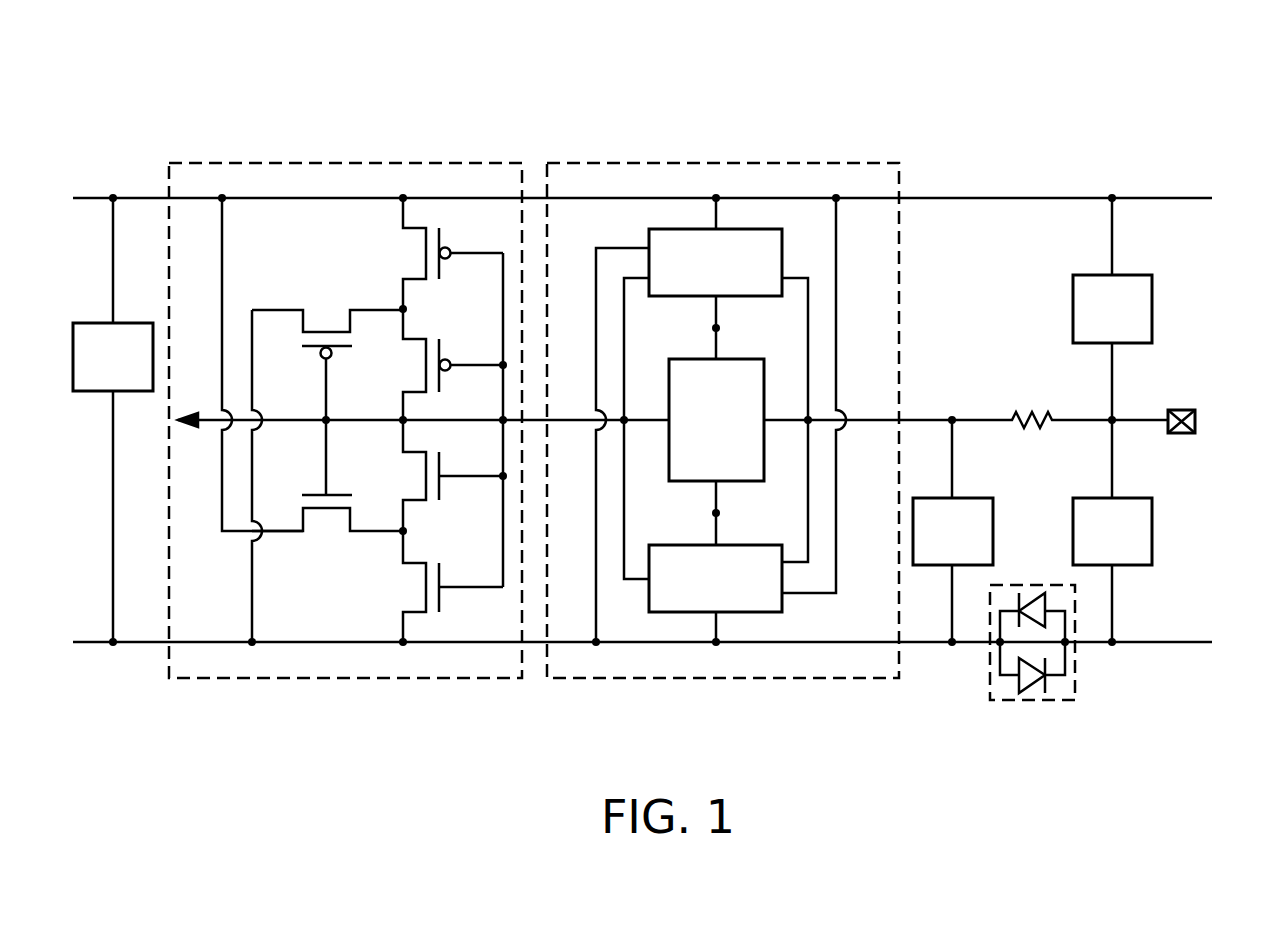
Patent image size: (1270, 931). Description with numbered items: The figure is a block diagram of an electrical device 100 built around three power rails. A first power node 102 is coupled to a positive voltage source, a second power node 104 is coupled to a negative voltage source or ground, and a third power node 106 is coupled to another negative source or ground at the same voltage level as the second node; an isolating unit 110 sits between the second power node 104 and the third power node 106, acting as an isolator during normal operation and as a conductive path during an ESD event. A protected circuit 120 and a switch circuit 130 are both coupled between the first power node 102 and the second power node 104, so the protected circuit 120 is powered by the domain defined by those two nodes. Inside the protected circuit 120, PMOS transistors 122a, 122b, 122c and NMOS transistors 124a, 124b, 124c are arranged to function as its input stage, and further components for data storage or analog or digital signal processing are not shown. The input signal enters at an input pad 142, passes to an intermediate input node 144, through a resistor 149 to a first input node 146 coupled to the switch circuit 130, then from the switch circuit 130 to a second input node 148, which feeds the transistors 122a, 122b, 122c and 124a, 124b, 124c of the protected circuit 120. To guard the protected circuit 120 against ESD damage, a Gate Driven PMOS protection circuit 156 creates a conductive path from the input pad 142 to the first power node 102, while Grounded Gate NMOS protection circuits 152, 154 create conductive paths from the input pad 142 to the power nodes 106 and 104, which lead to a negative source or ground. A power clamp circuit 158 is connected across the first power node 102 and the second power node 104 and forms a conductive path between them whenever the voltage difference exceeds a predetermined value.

The electrical device 100 is at (1192, 118).
The first power node 102 is at (1112, 196).
The second power node 104 is at (953, 646).
The third power node 106 is at (1113, 646).
The isolating unit 110 is at (1033, 703).
The protected circuit 120 is at (347, 679).
The PMOS transistor 122a is at (408, 254).
The PMOS transistor 122b is at (327, 318).
The PMOS transistor 122c is at (408, 365).
The NMOS transistor 124a is at (408, 587).
The NMOS transistor 124b is at (327, 523).
The NMOS transistor 124c is at (408, 477).
The switch circuit 130 is at (723, 679).
The input pad 142 is at (1182, 407).
The intermediate input node 144 is at (1113, 418).
The first input node 146 is at (952, 418).
The second input node 148 is at (498, 420).
The resistor 149 is at (1029, 413).
The GGN protection circuit 152 is at (1086, 548).
The GGN protection circuit 154 is at (927, 548).
The GDP protection circuit 156 is at (1086, 325).
The PC circuit 158 is at (87, 373).